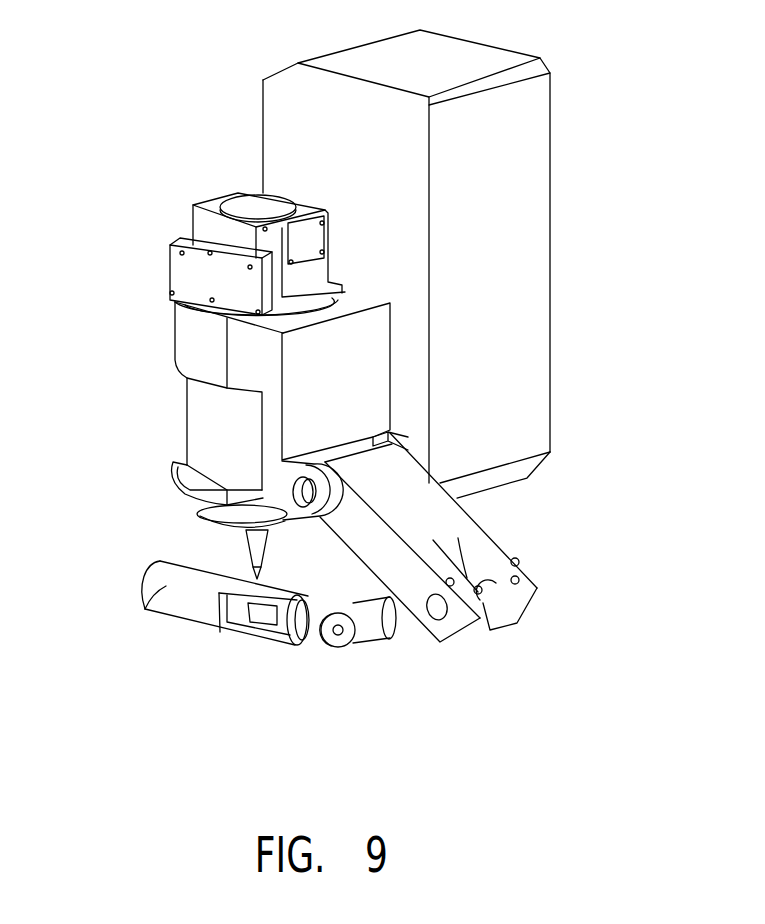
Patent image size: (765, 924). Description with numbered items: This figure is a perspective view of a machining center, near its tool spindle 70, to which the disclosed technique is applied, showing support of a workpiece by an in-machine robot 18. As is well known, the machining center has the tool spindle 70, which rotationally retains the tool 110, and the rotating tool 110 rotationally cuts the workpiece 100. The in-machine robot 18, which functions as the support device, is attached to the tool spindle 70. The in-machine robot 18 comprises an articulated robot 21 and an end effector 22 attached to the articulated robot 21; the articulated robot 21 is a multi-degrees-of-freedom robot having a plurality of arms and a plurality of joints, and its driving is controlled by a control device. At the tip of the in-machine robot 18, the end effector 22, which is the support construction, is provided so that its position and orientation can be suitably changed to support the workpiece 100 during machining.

The tool spindle 70 is at (207, 446).
The tool 110 is at (250, 568).
The articulated robot 21 is at (482, 545).
The end effector 22 is at (263, 603).
The workpiece 100 is at (144, 612).
The in-machine robot 18 is at (403, 673).